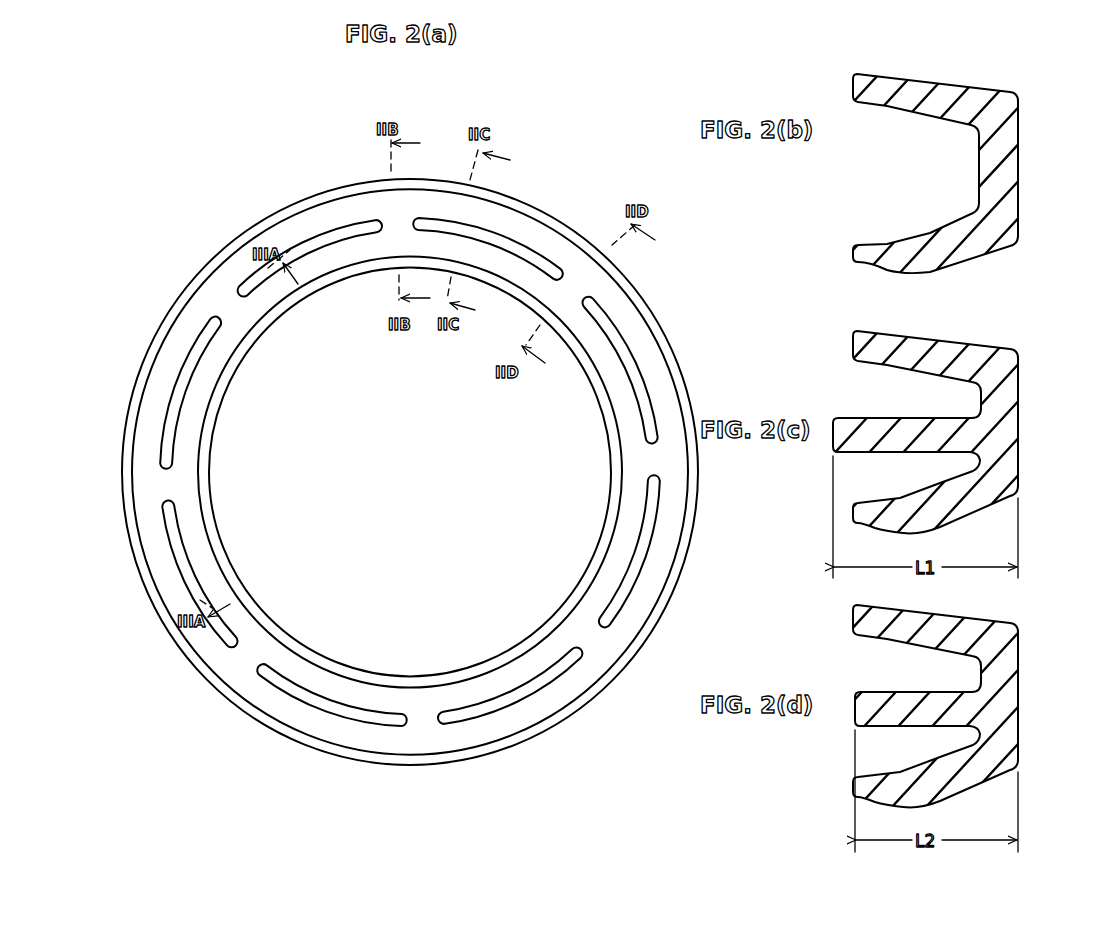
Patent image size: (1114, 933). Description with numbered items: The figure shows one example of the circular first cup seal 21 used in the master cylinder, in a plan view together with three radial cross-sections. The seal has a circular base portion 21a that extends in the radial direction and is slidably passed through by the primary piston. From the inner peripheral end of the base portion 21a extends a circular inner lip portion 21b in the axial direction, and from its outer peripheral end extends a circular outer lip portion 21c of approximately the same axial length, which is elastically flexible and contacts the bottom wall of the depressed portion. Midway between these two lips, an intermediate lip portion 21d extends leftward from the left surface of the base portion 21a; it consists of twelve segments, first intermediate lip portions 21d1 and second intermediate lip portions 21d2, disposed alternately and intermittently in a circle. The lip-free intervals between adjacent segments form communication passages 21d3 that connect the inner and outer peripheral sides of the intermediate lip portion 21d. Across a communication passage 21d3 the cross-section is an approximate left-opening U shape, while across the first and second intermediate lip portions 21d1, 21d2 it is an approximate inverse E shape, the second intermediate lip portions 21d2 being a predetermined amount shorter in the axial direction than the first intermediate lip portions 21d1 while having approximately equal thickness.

In FIG. 2a, the first cup seal 21 is at (193, 678).
In FIG. 2a, the base portion 21a is at (190, 407).
In FIG. 2a, the inner lip portion 21b is at (520, 650).
In FIG. 2a, the outer lip portion 21c is at (213, 265).
In FIG. 2a, the intermediate lip portion 21d is at (315, 765).
In FIG. 2a, the first intermediate lip portion 21d1 is at (478, 227).
The first intermediate lip portion 21d1 is at (885, 428).
In FIG. 2a, the second intermediate lip portion 21d2 is at (333, 237).
The second intermediate lip portion 21d2 is at (882, 705).
In FIG. 2a, the communication passage 21d3 is at (395, 222).